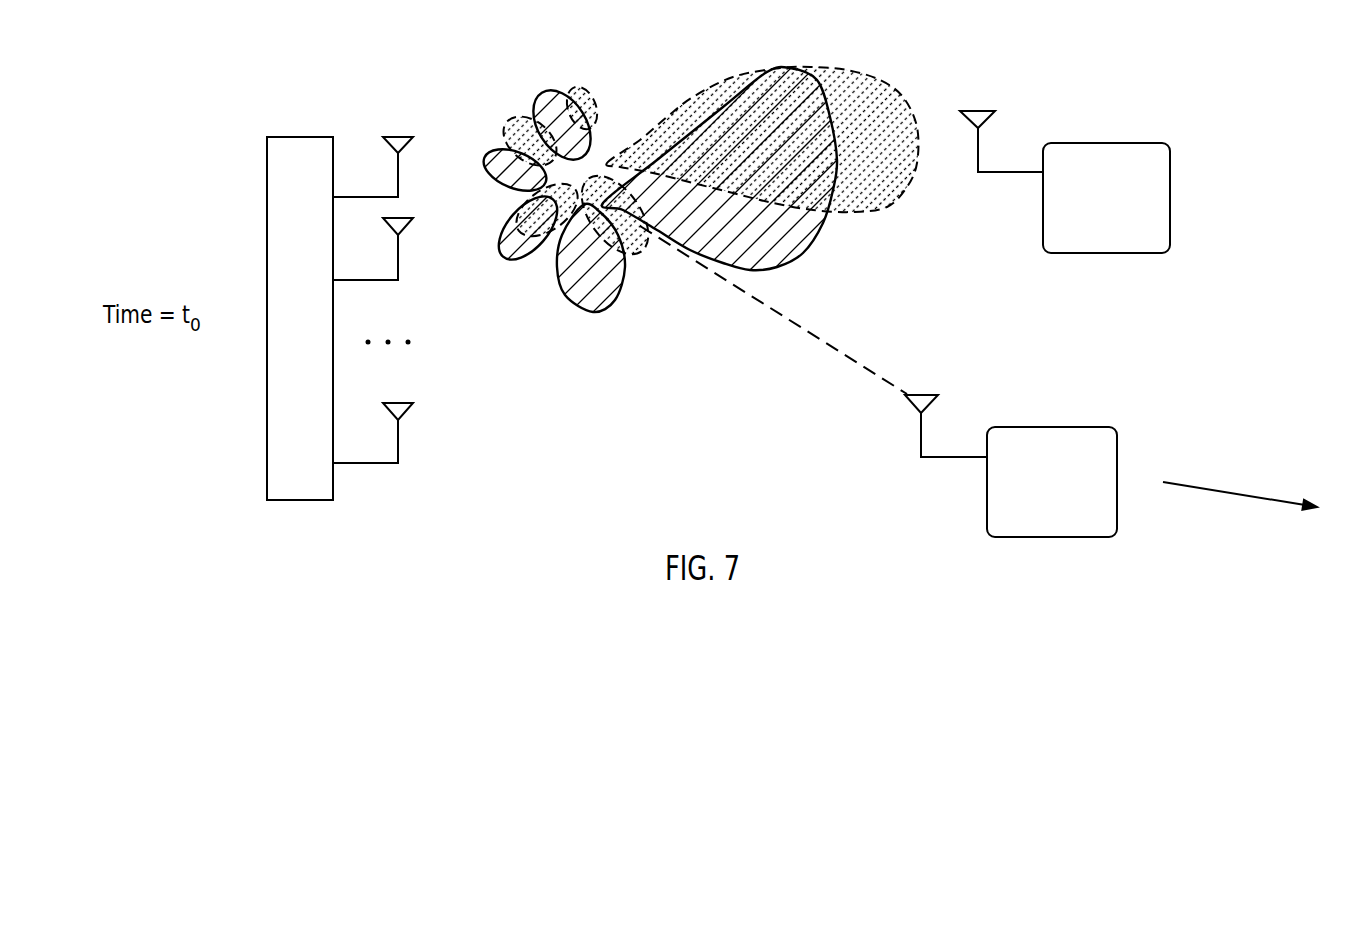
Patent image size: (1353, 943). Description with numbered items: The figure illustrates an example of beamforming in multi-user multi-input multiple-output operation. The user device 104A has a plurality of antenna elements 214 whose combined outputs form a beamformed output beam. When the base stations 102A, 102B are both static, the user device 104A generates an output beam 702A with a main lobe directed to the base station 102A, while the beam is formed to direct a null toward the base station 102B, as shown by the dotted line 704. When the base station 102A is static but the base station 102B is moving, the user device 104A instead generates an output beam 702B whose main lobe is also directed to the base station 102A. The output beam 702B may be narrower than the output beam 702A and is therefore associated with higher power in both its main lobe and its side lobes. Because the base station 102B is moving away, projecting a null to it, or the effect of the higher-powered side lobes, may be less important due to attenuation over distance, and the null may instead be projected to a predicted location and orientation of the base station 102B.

The user device 104A is at (302, 135).
The antenna element 214 is at (397, 133).
The output beam 702A is at (775, 268).
The output beam 702B is at (850, 67).
The dotted line 704 is at (843, 357).
The base station 102A is at (1142, 142).
The base station 102B is at (1087, 427).